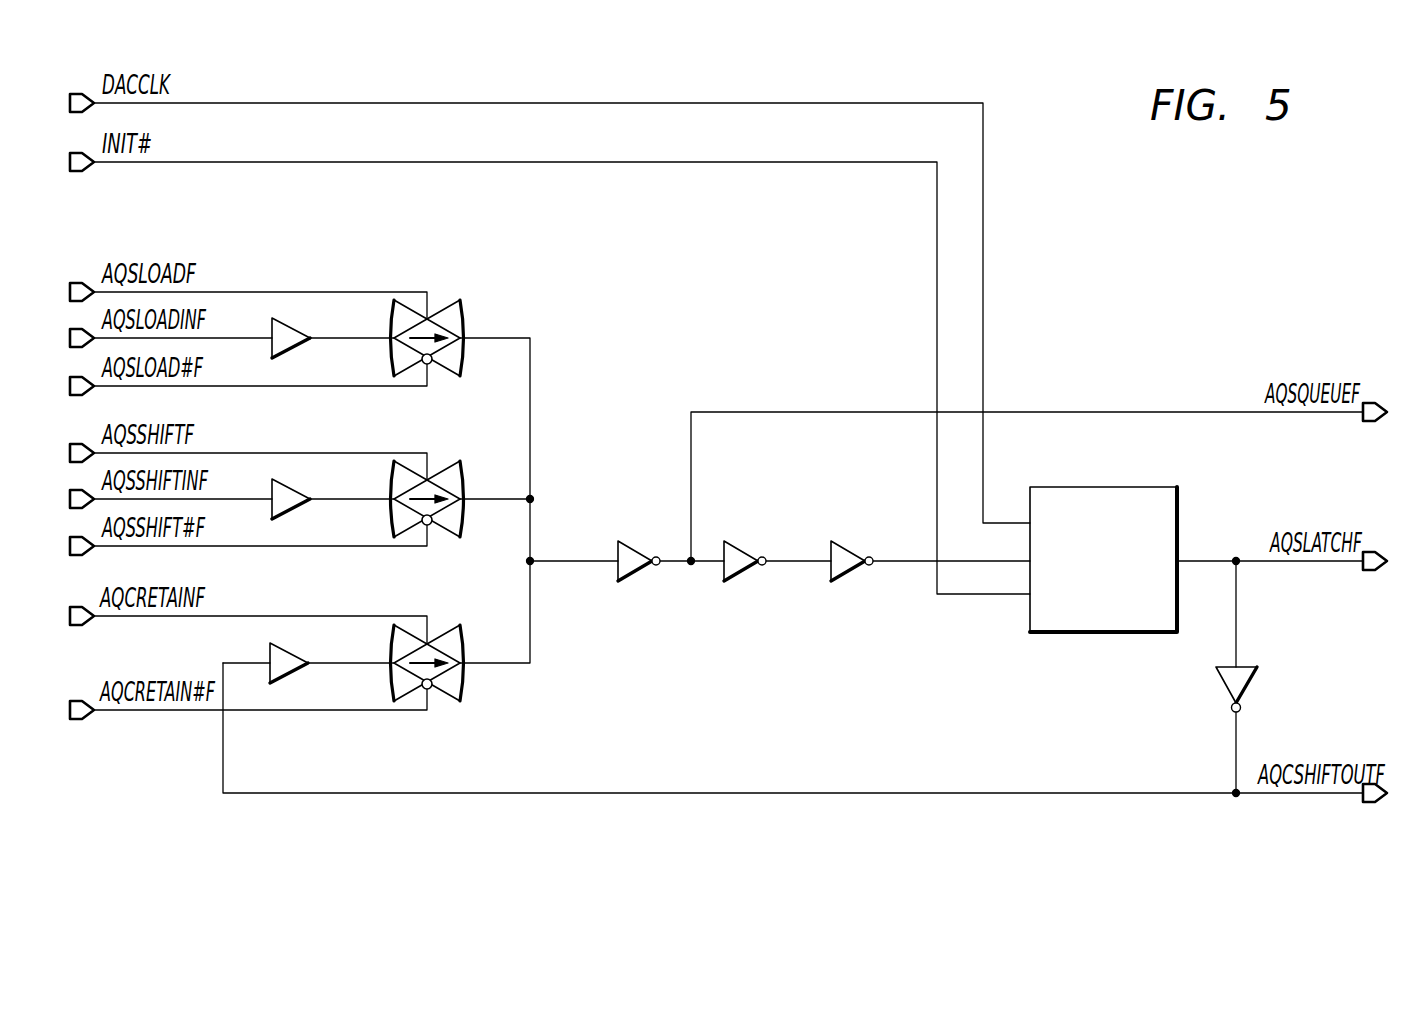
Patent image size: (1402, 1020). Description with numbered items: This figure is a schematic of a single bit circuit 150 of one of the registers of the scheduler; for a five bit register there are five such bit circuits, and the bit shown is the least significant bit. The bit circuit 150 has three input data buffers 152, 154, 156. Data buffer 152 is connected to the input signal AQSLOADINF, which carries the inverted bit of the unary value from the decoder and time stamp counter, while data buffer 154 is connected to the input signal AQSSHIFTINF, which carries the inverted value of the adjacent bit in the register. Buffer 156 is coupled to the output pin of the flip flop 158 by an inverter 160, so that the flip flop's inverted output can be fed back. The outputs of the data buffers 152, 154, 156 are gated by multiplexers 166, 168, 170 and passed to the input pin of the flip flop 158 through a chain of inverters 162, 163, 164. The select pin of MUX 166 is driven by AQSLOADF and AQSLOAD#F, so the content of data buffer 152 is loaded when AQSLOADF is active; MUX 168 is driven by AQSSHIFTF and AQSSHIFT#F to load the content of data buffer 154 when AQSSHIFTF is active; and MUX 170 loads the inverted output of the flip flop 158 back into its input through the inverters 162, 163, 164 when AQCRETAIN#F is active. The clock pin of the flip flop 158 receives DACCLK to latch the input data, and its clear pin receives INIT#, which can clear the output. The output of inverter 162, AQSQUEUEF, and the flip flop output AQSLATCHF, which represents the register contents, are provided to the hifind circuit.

The bit circuit 150 is at (748, 645).
The data buffer 152 is at (290, 328).
The data buffer 154 is at (290, 489).
The buffer 156 is at (288, 653).
The flip flop 158 is at (1100, 632).
The inverter 160 is at (1246, 688).
The inverter 162 is at (636, 574).
The inverter 163 is at (742, 574).
The inverter 164 is at (849, 574).
The multiplexer 166 is at (452, 306).
The multiplexer 168 is at (452, 467).
The multiplexer 170 is at (452, 631).